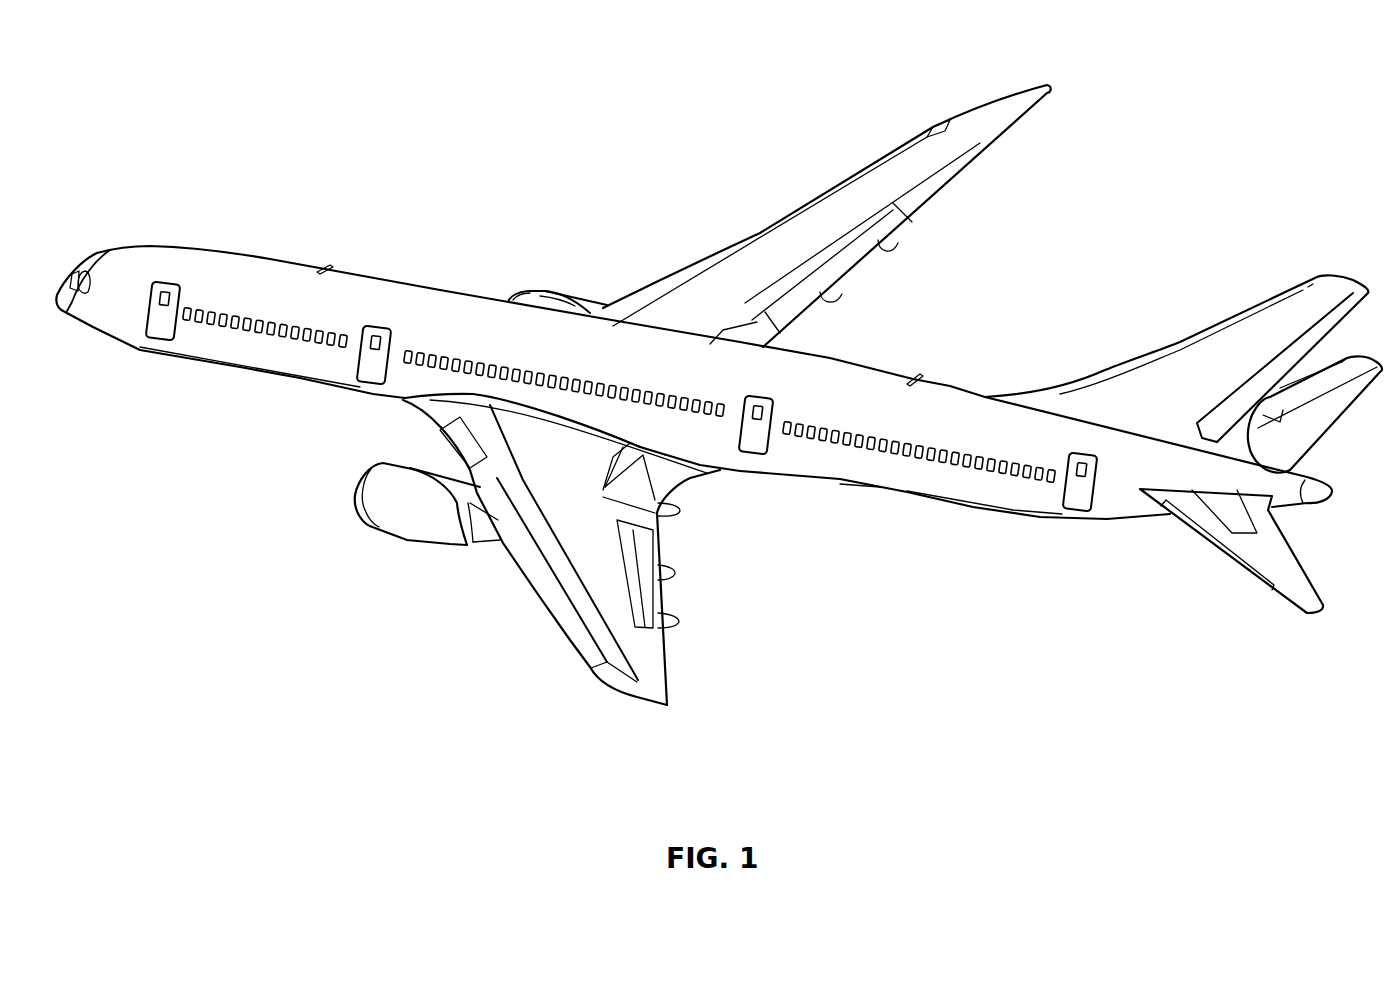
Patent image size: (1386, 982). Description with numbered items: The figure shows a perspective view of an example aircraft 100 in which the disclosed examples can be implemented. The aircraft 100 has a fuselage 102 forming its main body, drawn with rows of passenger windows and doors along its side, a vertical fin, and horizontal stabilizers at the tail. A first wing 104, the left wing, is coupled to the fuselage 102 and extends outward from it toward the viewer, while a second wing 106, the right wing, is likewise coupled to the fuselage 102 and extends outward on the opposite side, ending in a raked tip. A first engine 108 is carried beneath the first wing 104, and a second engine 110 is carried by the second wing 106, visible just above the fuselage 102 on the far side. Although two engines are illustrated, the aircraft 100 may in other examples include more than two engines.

The aircraft 100 is at (150, 86).
The fuselage 102 is at (402, 297).
The first wing 104 is at (540, 463).
The second wing 106 is at (713, 303).
The first engine 108 is at (380, 487).
The second engine 110 is at (532, 296).